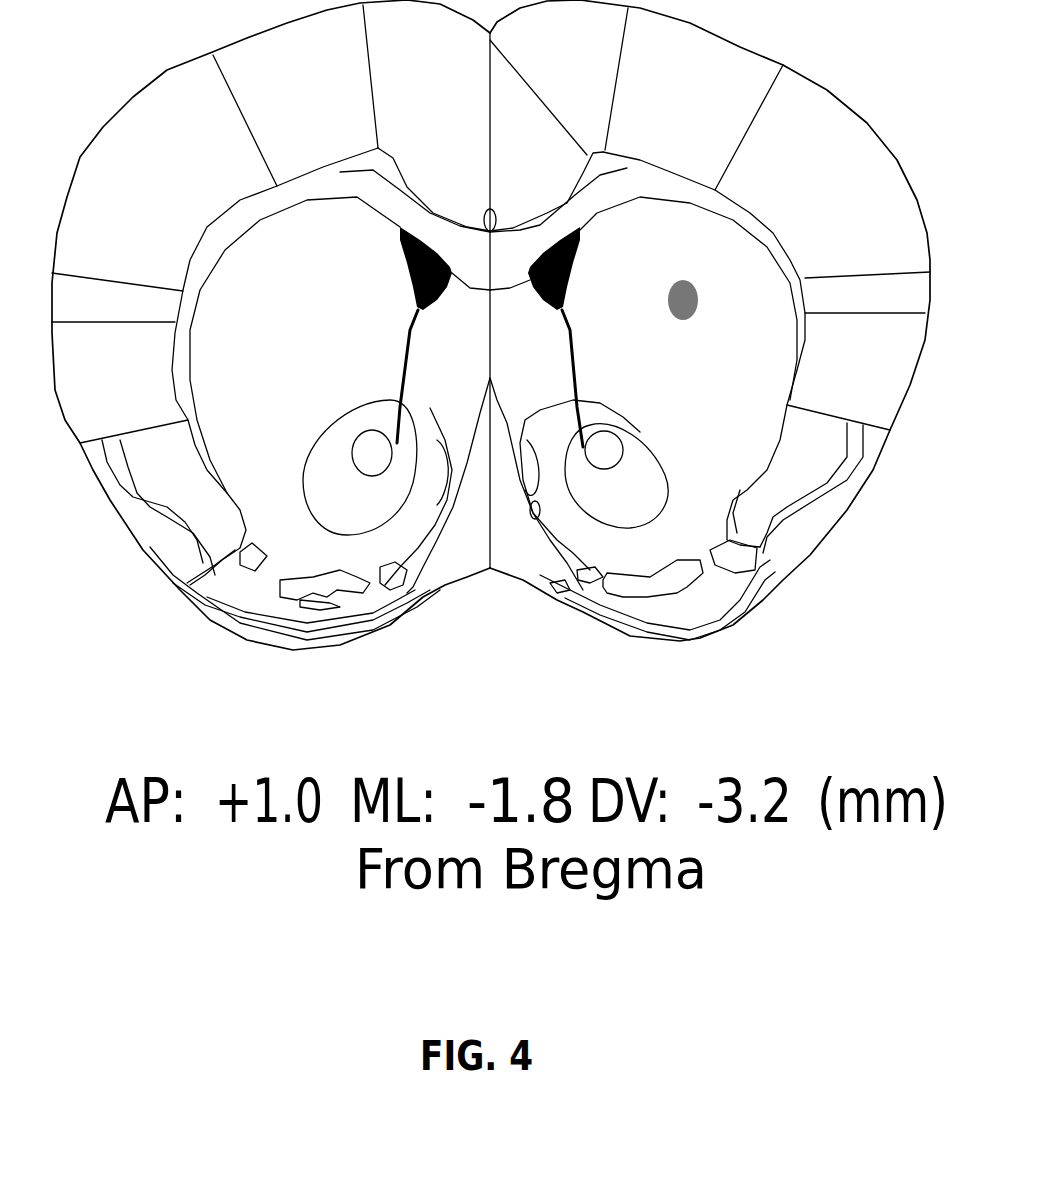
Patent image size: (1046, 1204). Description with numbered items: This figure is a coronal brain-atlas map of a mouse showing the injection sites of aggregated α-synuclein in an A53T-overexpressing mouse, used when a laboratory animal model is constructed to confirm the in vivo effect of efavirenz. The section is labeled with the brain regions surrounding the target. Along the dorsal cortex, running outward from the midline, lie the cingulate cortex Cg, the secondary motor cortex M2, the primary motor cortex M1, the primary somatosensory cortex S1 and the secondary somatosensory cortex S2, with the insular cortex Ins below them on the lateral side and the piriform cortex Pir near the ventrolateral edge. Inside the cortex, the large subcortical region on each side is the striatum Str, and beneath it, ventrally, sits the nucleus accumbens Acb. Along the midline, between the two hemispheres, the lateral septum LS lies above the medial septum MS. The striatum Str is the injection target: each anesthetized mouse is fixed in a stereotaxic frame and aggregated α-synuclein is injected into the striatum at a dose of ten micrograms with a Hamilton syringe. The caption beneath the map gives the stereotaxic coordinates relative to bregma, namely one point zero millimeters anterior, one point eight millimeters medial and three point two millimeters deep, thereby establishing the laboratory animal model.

The secondary motor cortex M2 is at (559, 81).
The primary motor cortex M1 is at (724, 127).
The primary somatosensory cortex S1 is at (729, 349).
The secondary somatosensory cortex S2 is at (867, 295).
The insular cortex Ins is at (838, 391).
The piriform cortex Pir is at (701, 531).
The cingulate cortex Cg is at (558, 183).
The lateral septum LS is at (501, 396).
The striatum Str is at (662, 322).
The nucleus accumbens Acb is at (594, 485).
The medial septum MS is at (532, 484).